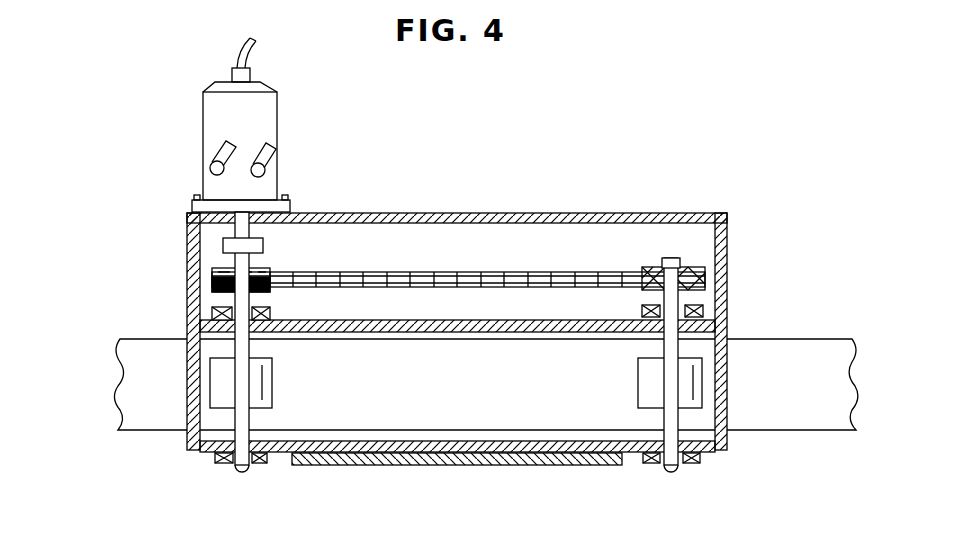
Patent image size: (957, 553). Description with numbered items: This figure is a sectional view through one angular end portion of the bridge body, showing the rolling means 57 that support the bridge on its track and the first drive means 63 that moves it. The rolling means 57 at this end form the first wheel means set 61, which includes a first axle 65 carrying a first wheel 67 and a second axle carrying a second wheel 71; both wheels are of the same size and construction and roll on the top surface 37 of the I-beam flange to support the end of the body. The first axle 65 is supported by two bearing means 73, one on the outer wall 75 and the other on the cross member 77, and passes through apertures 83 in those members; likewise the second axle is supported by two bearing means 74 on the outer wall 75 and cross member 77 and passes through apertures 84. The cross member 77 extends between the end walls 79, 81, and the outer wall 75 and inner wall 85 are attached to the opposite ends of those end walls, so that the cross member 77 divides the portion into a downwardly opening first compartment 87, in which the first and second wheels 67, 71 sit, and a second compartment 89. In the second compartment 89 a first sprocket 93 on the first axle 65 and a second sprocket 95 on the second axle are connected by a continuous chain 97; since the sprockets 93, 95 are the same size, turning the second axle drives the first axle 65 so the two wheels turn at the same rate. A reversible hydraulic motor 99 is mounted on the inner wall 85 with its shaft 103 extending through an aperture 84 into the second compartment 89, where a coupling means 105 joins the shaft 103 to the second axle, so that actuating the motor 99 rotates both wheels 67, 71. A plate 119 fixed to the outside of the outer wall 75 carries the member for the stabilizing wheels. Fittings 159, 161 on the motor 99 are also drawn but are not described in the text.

The top surface 37 is at (438, 390).
The rolling means 57 is at (698, 482).
The first wheel means set 61 is at (708, 349).
The first drive means 63 is at (706, 249).
The first axle 65 is at (660, 418).
The first wheel 67 is at (650, 376).
The second wheel 71 is at (258, 398).
The bearing means 73 is at (696, 318).
The bearing means 74 is at (268, 313).
The outer wall 75 is at (445, 453).
The cross member 77 is at (515, 332).
The end wall 79 is at (722, 410).
The end wall 81 is at (190, 412).
The apertures 83 is at (658, 338).
The apertures 84 is at (232, 232).
The inner wall 85 is at (658, 215).
The first compartment 87 is at (531, 433).
The second compartment 89 is at (580, 236).
The first sprocket 93 is at (700, 275).
The second sprocket 95 is at (215, 268).
The continuous chain 97 is at (465, 272).
The hydraulic motor 99 is at (262, 118).
The shaft 103 is at (255, 234).
The coupling means 105 is at (250, 246).
The plate 119 is at (590, 466).
The motor connector 159 is at (272, 158).
The motor connector 161 is at (218, 156).